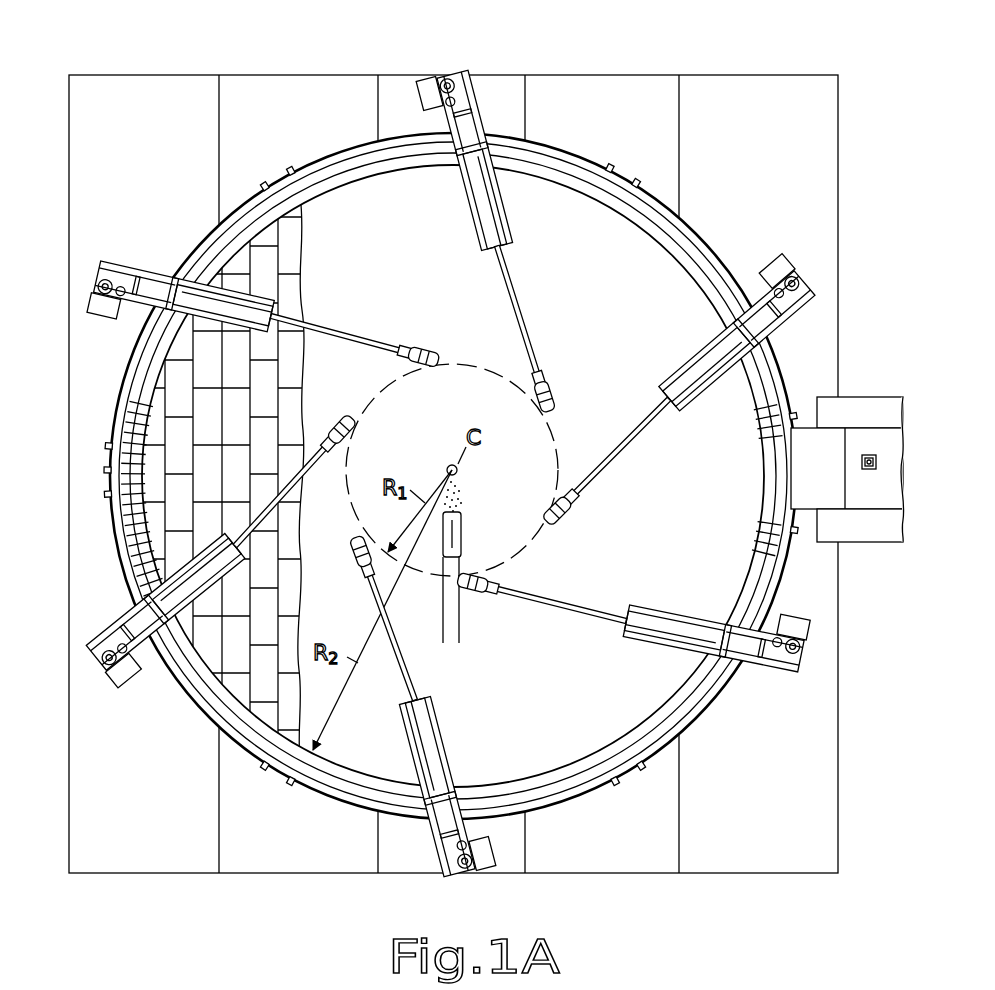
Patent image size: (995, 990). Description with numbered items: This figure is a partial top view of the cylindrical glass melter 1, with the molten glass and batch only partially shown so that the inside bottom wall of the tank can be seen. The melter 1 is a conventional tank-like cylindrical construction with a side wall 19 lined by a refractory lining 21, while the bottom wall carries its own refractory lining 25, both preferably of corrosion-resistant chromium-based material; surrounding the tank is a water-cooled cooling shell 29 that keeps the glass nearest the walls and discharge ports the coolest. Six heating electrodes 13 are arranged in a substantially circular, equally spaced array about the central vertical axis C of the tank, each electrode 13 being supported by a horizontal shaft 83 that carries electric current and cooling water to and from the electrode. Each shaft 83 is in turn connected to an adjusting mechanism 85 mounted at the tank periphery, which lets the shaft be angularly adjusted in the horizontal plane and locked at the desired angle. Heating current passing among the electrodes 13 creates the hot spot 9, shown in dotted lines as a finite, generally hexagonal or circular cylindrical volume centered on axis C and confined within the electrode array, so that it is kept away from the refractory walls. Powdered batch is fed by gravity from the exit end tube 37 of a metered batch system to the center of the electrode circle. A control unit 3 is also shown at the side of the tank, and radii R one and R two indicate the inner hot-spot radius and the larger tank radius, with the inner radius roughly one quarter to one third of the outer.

The melter 1 is at (508, 55).
The control unit 3 is at (868, 392).
The hot spot 9 is at (437, 424).
The heating electrode 13 is at (437, 348).
The side wall 19 is at (223, 722).
The refractory lining 21 is at (262, 739).
The refractory lining 25 is at (160, 412).
The cooling shell 29 is at (197, 707).
The exit end tube 37 is at (460, 540).
The horizontal shaft 83 is at (347, 332).
The adjusting mechanism 85 is at (422, 100).